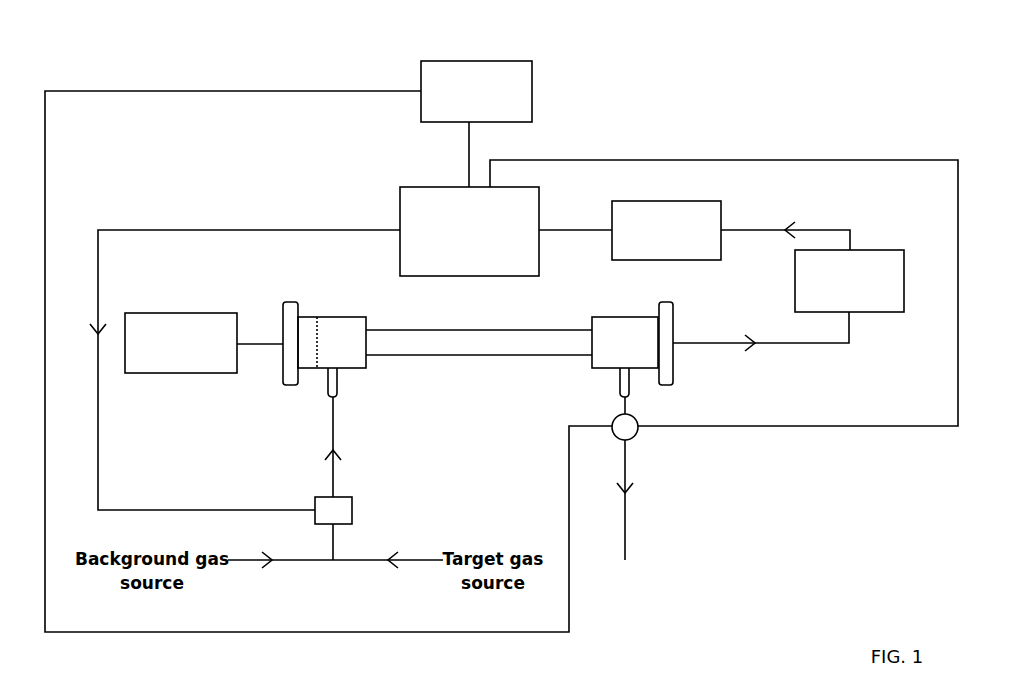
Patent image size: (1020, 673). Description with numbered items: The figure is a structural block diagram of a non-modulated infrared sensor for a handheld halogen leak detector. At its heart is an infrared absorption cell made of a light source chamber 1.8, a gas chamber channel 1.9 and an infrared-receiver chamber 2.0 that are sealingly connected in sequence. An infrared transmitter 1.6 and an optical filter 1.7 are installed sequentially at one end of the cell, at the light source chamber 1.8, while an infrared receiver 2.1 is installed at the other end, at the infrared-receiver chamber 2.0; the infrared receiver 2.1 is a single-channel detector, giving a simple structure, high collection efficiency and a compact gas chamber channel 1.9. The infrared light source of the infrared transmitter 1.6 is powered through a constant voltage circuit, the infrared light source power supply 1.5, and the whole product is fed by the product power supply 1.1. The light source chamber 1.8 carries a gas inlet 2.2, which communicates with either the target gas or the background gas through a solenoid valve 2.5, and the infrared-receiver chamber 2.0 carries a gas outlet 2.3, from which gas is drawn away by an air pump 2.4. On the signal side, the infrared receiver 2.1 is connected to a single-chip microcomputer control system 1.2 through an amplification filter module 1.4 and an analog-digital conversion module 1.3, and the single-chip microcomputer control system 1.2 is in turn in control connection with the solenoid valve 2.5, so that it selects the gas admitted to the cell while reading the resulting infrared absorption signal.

The product power supply 1.1 is at (487, 61).
The single-chip microcomputer control system 1.2 is at (525, 190).
The analog-digital conversion module 1.3 is at (684, 201).
The amplification filter module 1.4 is at (858, 248).
The infrared light source power supply 1.5 is at (176, 305).
The infrared transmitter 1.6 is at (294, 300).
The optical filter 1.7 is at (317, 317).
The light source chamber 1.8 is at (343, 317).
The gas chamber channel 1.9 is at (444, 328).
The infrared-receiver chamber 2.0 is at (626, 315).
The infrared receiver 2.1 is at (676, 370).
The gas inlet 2.2 is at (337, 385).
The gas outlet 2.3 is at (618, 383).
The air pump 2.4 is at (636, 440).
The solenoid valve 2.5 is at (355, 497).